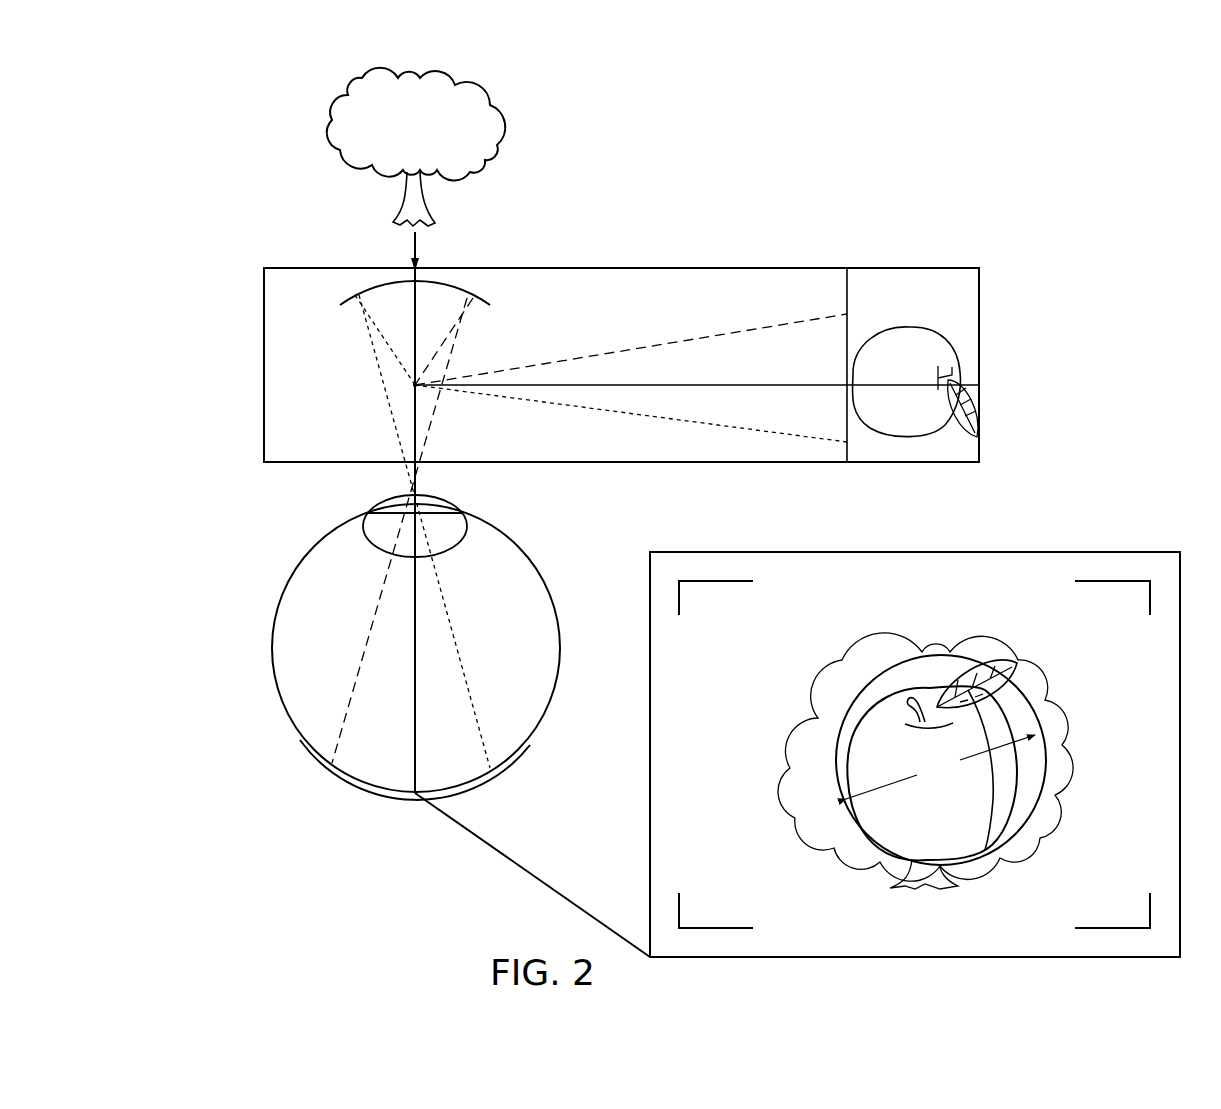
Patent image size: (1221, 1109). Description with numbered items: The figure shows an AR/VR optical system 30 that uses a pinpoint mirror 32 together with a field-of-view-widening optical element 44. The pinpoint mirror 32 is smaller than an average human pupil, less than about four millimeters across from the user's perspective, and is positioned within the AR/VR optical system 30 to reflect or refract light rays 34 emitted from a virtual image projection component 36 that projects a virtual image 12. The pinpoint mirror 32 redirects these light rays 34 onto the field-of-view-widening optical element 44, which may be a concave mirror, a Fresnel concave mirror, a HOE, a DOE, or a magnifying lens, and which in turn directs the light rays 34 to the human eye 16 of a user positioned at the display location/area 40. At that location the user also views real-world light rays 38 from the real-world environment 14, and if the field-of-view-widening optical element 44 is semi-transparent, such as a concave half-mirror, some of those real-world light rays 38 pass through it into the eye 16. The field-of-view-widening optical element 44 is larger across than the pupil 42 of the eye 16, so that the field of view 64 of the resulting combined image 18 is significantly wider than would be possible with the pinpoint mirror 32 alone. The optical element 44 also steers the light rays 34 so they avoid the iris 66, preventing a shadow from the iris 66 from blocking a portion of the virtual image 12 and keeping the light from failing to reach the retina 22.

The virtual image 12 is at (960, 355).
The real-world environment 14 is at (506, 134).
The human eye 16 is at (270, 637).
The combined image 18 is at (995, 553).
The retina 22 is at (360, 787).
The AR/VR optical system 30 is at (262, 372).
The pinpoint mirror 32 is at (409, 392).
The light rays 34 is at (597, 345).
The virtual image projection component 36 is at (928, 262).
The real-world light rays 38 is at (395, 248).
The display location/area 40 is at (208, 522).
The pupil 42 is at (430, 508).
The field-of-view-widening optical element 44 is at (350, 300).
The field of view 64 is at (862, 840).
The iris 66 is at (366, 513).